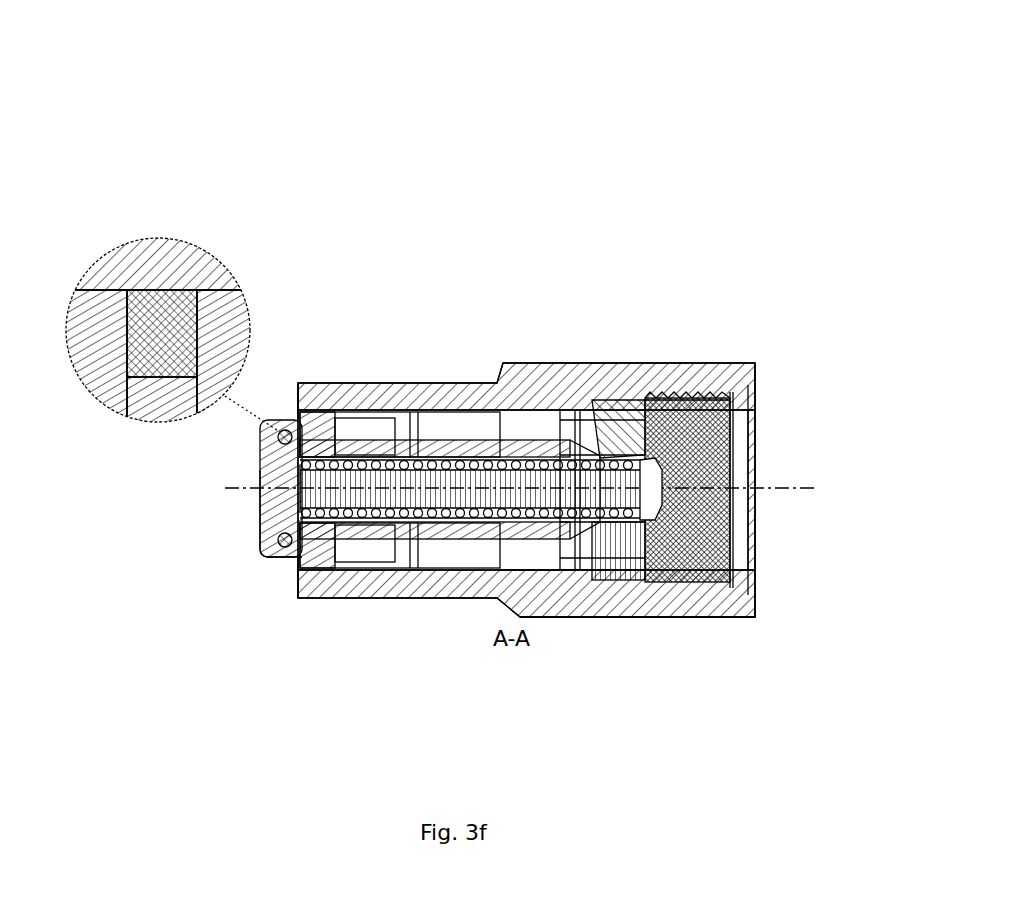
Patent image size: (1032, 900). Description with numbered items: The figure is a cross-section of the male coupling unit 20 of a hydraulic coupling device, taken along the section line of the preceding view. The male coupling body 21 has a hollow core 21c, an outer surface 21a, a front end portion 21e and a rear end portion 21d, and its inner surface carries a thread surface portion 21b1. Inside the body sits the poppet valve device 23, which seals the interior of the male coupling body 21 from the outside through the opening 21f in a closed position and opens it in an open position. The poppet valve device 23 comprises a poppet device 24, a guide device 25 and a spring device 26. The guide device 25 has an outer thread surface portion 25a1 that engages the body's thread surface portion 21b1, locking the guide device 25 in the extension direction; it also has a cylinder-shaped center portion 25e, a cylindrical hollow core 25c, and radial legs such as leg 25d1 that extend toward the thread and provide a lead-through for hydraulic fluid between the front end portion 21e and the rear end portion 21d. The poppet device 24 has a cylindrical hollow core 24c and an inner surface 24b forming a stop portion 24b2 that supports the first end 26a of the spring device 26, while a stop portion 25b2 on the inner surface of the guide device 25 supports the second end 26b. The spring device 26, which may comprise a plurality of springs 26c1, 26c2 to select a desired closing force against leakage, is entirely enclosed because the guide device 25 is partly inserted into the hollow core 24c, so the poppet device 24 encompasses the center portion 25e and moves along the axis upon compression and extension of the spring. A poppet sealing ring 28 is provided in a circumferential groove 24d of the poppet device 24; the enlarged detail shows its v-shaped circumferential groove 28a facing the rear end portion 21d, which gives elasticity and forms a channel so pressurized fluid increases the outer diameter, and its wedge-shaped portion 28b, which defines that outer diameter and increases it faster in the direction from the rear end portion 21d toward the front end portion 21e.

The male coupling unit 20 is at (305, 138).
The male coupling body 21 is at (556, 398).
The outer surface 21a is at (655, 615).
The thread surface portion 21b1 is at (737, 390).
The hollow core 21c is at (553, 550).
The rear end portion 21d is at (743, 610).
The front end portion 21e is at (296, 418).
The opening 21f is at (262, 552).
The poppet valve device 23 is at (266, 582).
The poppet device 24 is at (403, 437).
The inner surface 24b is at (345, 545).
The stop portion 24b2 is at (283, 508).
The cylindrical hollow core 24c is at (362, 458).
The circumferential groove 24d is at (153, 377).
The guide device 25 is at (557, 400).
The thread surface portion 25a1 is at (610, 400).
The stop portion 25b2 is at (643, 462).
The cylindrical hollow core 25c is at (555, 460).
The radial leg 25d1 is at (645, 403).
The center portion 25e is at (482, 452).
The spring device 26 is at (471, 489).
The first end 26a is at (292, 470).
The second end 26b is at (643, 508).
The spring 26c1 is at (513, 512).
The spring 26c2 is at (480, 500).
The poppet sealing ring 28 is at (150, 313).
The circumferential groove 28a is at (210, 312).
The wedge-shaped portion 28b is at (190, 285).